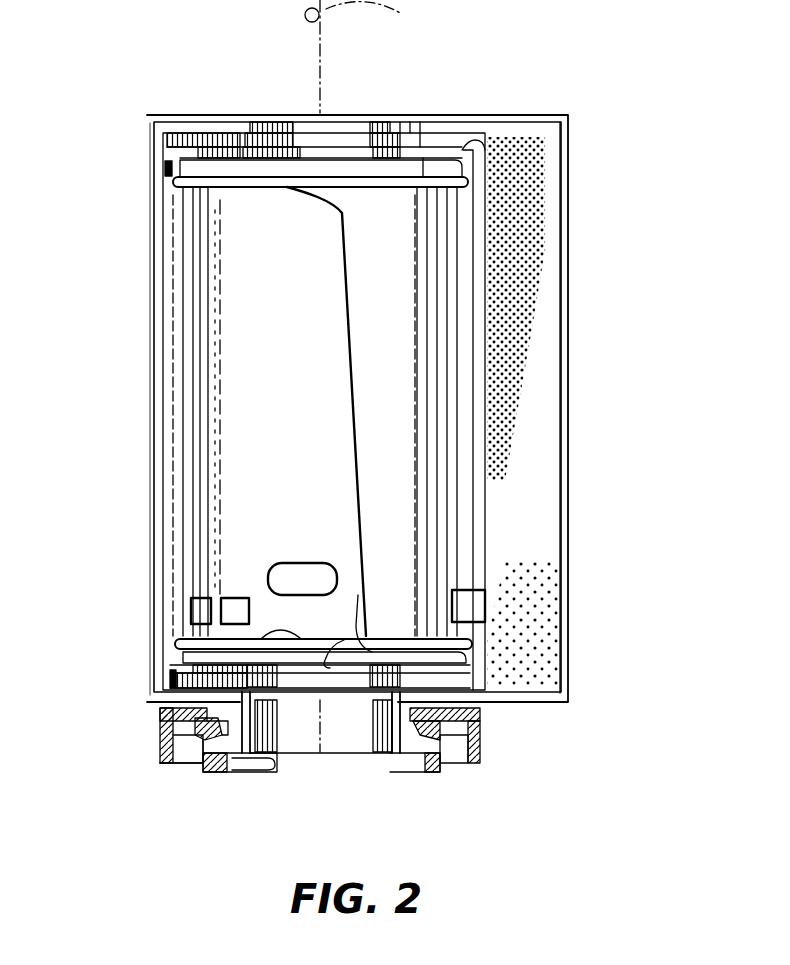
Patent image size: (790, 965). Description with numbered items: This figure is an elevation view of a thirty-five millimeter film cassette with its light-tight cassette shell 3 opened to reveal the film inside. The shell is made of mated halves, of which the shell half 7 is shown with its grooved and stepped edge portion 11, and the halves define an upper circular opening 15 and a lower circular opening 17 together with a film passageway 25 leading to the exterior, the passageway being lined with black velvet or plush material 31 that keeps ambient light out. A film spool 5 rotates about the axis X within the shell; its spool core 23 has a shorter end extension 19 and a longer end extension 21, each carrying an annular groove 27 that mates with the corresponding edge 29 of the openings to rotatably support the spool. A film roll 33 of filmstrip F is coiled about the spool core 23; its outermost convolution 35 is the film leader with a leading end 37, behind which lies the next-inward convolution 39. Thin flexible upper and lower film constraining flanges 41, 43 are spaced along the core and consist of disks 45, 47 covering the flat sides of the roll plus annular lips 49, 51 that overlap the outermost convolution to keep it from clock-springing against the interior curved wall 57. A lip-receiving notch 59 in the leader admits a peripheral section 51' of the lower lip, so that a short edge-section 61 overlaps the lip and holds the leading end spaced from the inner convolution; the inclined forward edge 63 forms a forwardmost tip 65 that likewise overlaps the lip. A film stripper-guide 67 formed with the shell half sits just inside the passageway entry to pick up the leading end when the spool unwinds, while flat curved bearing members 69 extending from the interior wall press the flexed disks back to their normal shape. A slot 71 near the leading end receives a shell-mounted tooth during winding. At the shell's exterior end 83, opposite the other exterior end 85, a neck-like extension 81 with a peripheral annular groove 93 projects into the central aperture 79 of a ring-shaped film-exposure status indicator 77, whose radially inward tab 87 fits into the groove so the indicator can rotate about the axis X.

The axis X is at (365, 56).
The cassette shell 3 is at (201, 110).
The film spool 5 is at (184, 475).
The shell half 7 is at (168, 113).
The grooved and stepped edge portion 11 is at (157, 226).
The upper circular opening 15 is at (383, 112).
The lower circular opening 17 is at (393, 756).
The shorter end extension 19 is at (265, 118).
The longer end extension 21 is at (290, 737).
The spool core 23 is at (268, 110).
The film passageway 25 is at (560, 300).
The annular groove 27 is at (298, 133).
The edge of opening 29 is at (378, 125).
The black velvet or plush material 31 is at (525, 195).
The film roll 33 is at (184, 430).
The outermost convolution 35 is at (193, 358).
The leading end 37 is at (345, 445).
The next-inward convolution 39 is at (413, 373).
The upper film constraining flange 41 is at (174, 166).
The lower film constraining flange 43 is at (181, 656).
The disk 45 is at (458, 162).
The disk 47 is at (465, 684).
The annular lip 49 is at (463, 152).
The annular lip 51 is at (398, 651).
The peripheral section of annular lip 51' is at (280, 694).
The interior curved wall 57 is at (178, 300).
The lip-receiving notch 59 is at (268, 630).
The edge-section 61 is at (325, 667).
The forward edge 63 is at (358, 345).
The forwardmost tip 65 is at (357, 596).
The film stripper-guide 67 is at (452, 590).
The curved bearing member 69 is at (190, 143).
The slot 71 is at (303, 572).
The film-exposure status indicator 77 is at (152, 748).
The central aperture 79 is at (432, 753).
The neck-like extension 81 is at (236, 773).
The exterior end 83 is at (163, 724).
The exterior end 85 is at (424, 157).
The radially inward tab 87 is at (205, 728).
The peripheral annular groove 93 is at (435, 727).
The filmstrip F is at (217, 520).